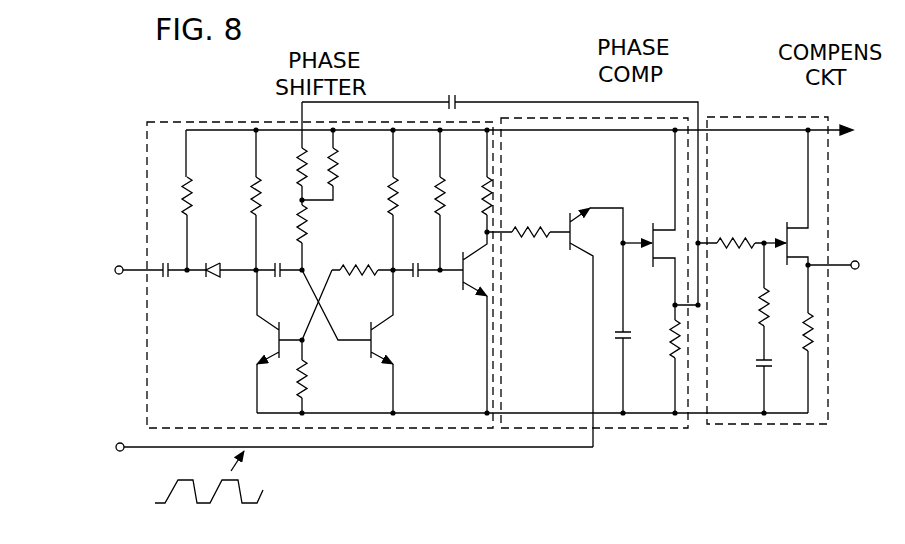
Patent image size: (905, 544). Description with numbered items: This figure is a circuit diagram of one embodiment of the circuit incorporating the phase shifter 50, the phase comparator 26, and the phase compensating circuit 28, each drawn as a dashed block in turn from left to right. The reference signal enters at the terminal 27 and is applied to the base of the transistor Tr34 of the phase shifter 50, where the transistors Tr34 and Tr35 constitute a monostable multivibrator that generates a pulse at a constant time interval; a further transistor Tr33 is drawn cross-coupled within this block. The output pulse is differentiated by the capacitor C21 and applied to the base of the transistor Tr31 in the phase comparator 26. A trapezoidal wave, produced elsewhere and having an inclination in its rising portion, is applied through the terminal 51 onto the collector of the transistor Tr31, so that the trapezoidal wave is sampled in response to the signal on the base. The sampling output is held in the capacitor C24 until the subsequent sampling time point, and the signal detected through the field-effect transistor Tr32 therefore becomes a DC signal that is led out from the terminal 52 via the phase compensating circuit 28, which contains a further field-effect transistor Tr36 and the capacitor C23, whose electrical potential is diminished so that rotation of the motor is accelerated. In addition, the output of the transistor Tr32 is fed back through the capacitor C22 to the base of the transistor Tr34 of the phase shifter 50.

The phase shifter 50 is at (240, 100).
The phase comparator 26 is at (560, 117).
The phase compensating circuit 28 is at (760, 117).
The terminal 27 is at (117, 266).
The terminal 51 is at (122, 443).
The terminal 52 is at (852, 262).
The capacitor C21 is at (418, 256).
The capacitor C22 is at (475, 95).
The capacitor C23 is at (782, 380).
The capacitor C24 is at (641, 353).
The transistor Tr31 is at (585, 316).
The field-effect transistor Tr32 is at (649, 217).
The phase shifter transistor Tr33 is at (253, 341).
The transistor Tr34 is at (403, 341).
The transistor Tr35 is at (465, 322).
The compensation circuit field effect transistor Tr36 is at (782, 197).